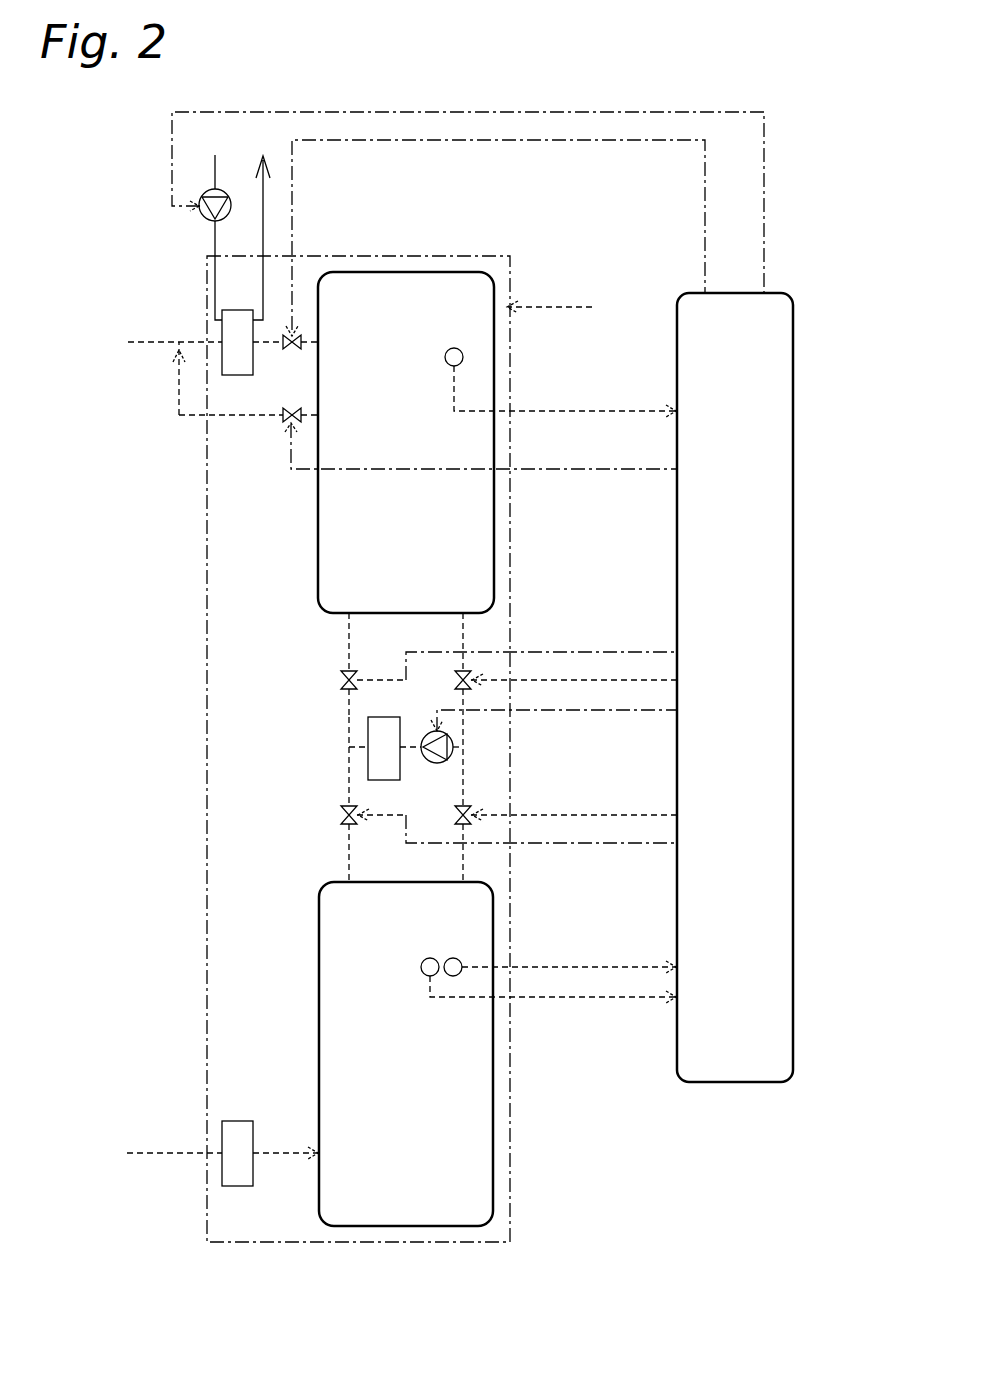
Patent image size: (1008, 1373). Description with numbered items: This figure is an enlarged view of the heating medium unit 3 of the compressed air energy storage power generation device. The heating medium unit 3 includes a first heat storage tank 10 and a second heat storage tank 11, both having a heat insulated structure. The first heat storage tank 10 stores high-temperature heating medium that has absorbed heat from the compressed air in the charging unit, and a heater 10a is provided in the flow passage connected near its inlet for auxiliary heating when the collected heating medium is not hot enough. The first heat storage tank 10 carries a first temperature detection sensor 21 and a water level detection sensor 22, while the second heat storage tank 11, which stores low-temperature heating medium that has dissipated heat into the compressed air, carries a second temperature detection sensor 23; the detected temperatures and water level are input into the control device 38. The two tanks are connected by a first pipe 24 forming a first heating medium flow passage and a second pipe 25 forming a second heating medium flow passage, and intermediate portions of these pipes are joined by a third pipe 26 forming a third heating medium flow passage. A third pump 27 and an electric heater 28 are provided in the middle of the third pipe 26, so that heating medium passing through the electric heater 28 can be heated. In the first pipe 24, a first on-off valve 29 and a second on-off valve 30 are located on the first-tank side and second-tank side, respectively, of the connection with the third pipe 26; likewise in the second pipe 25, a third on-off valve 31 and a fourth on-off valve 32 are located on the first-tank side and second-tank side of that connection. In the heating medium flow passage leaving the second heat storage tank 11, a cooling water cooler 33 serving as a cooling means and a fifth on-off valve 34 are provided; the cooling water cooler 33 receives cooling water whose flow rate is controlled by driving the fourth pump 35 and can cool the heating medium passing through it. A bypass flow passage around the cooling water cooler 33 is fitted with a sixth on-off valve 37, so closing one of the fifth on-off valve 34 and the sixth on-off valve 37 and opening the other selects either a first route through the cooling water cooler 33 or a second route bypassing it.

The heating medium unit 3 is at (355, 256).
The first heat storage tank 10 is at (493, 1210).
The heater 10a is at (222, 1121).
The second heat storage tank 11 is at (478, 268).
The first temperature detection sensor 21 is at (422, 967).
The water level detection sensor 22 is at (450, 958).
The second temperature detection sensor 23 is at (454, 348).
The first pipe 24 is at (349, 727).
The second pipe 25 is at (463, 785).
The third pipe 26 is at (410, 750).
The third pump 27 is at (453, 742).
The electric heater 28 is at (370, 768).
The first on-off valve 29 is at (349, 820).
The second on-off valve 30 is at (345, 672).
The third on-off valve 31 is at (470, 820).
The fourth on-off valve 32 is at (470, 678).
The cooling water cooler 33 is at (233, 337).
The fifth on-off valve 34 is at (285, 352).
The fourth pump 35 is at (205, 222).
The sixth on-off valve 37 is at (287, 423).
The control device 38 is at (794, 405).